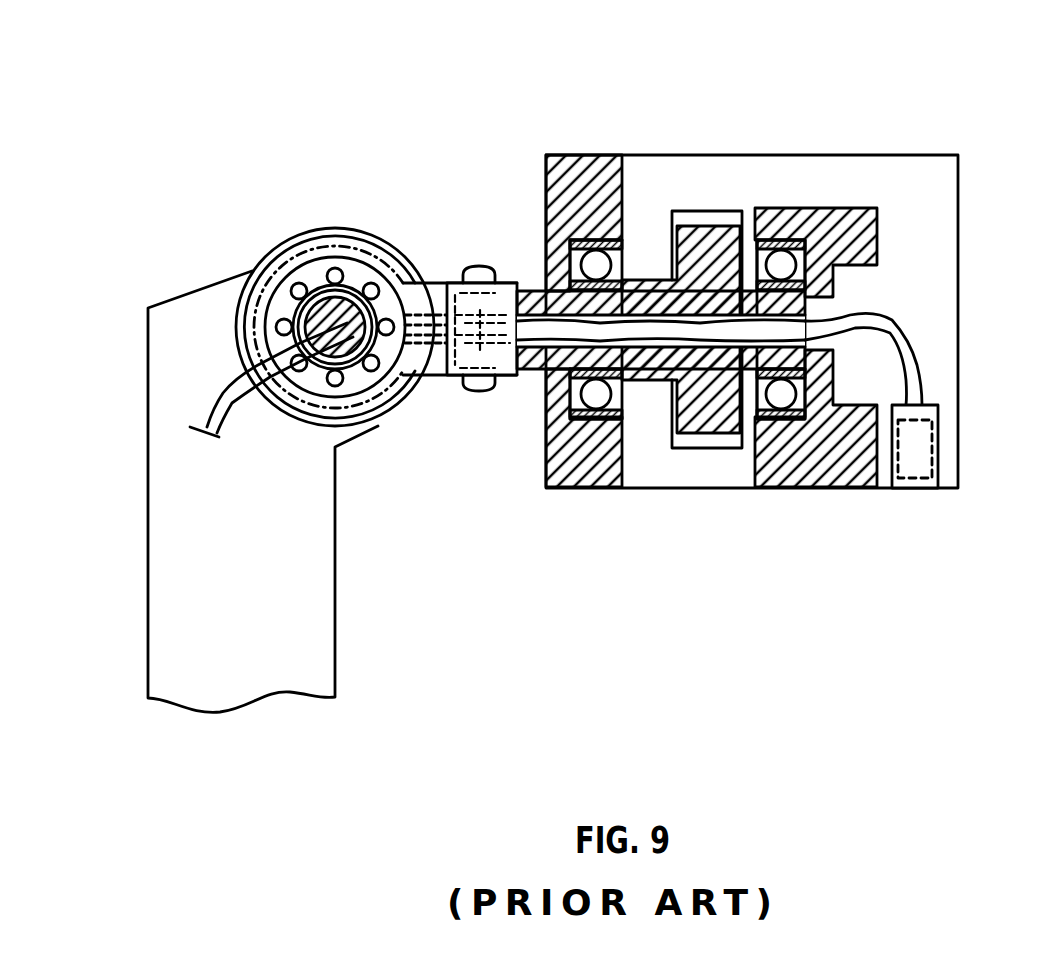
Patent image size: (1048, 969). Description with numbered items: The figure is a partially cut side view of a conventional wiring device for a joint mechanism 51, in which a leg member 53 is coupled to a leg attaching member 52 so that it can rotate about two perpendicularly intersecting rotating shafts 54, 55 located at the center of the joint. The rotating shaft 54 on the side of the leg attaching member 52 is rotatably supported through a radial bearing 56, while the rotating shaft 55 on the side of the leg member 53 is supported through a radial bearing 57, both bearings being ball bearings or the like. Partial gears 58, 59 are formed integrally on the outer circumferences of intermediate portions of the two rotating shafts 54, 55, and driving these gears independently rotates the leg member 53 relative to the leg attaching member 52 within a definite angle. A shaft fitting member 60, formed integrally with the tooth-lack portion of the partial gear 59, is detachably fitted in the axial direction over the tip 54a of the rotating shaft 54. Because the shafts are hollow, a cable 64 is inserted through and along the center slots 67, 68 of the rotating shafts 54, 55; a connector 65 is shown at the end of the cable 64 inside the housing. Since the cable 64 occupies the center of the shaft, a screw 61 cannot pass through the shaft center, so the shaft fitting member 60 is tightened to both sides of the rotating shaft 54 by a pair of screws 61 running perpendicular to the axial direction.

The joint mechanism 51 is at (479, 119).
The leg attaching member 52 is at (944, 173).
The leg member 53 is at (157, 405).
The rotating shaft 54 is at (638, 280).
The tip 54a is at (497, 262).
The rotating shaft 55 is at (312, 290).
The radial bearing 56 is at (595, 425).
The radial bearing 57 is at (280, 293).
The partial gear 58 is at (713, 443).
The partial gear 59 is at (338, 243).
The shaft fitting member 60 is at (448, 282).
The screw 61 is at (472, 267).
The cable 64 is at (190, 438).
The connector 65 is at (940, 400).
The center slot 67 is at (655, 382).
The center slot 68 is at (343, 347).